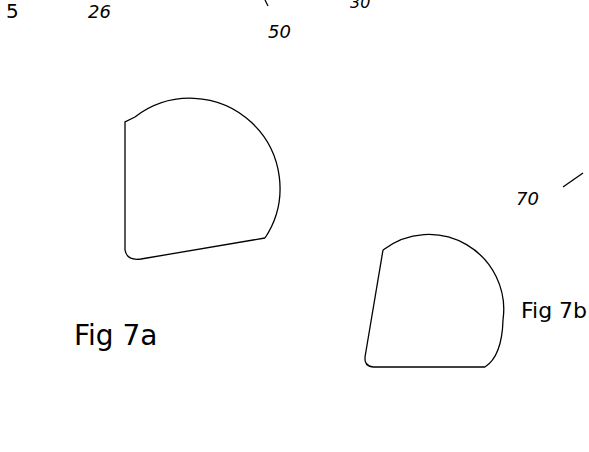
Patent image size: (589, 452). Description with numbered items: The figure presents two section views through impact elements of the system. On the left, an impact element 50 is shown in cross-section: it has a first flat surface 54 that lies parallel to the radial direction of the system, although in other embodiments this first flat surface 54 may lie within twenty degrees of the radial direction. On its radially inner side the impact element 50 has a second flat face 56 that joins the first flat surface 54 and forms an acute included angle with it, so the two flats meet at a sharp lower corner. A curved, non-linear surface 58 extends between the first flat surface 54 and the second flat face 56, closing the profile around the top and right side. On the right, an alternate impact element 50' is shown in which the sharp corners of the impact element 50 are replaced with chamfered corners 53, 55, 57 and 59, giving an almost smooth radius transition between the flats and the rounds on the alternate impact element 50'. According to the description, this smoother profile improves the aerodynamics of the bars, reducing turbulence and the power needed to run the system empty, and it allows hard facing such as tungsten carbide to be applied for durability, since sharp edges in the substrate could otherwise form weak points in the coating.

In FIG. 7A, the impact element 50 is at (224, 165).
In FIG. 7B, the impact element 50' is at (454, 284).
In FIG. 7B, the chamfered corner 53 is at (372, 370).
In FIG. 7A, the first flat surface 54 is at (125, 190).
In FIG. 7B, the chamfered corner 55 is at (365, 357).
In FIG. 7A, the second flat face 56 is at (196, 249).
In FIG. 7B, the chamfered corner 57 is at (383, 250).
In FIG. 7A, the curved surface 58 is at (224, 103).
In FIG. 7B, the chamfered corner 59 is at (483, 367).